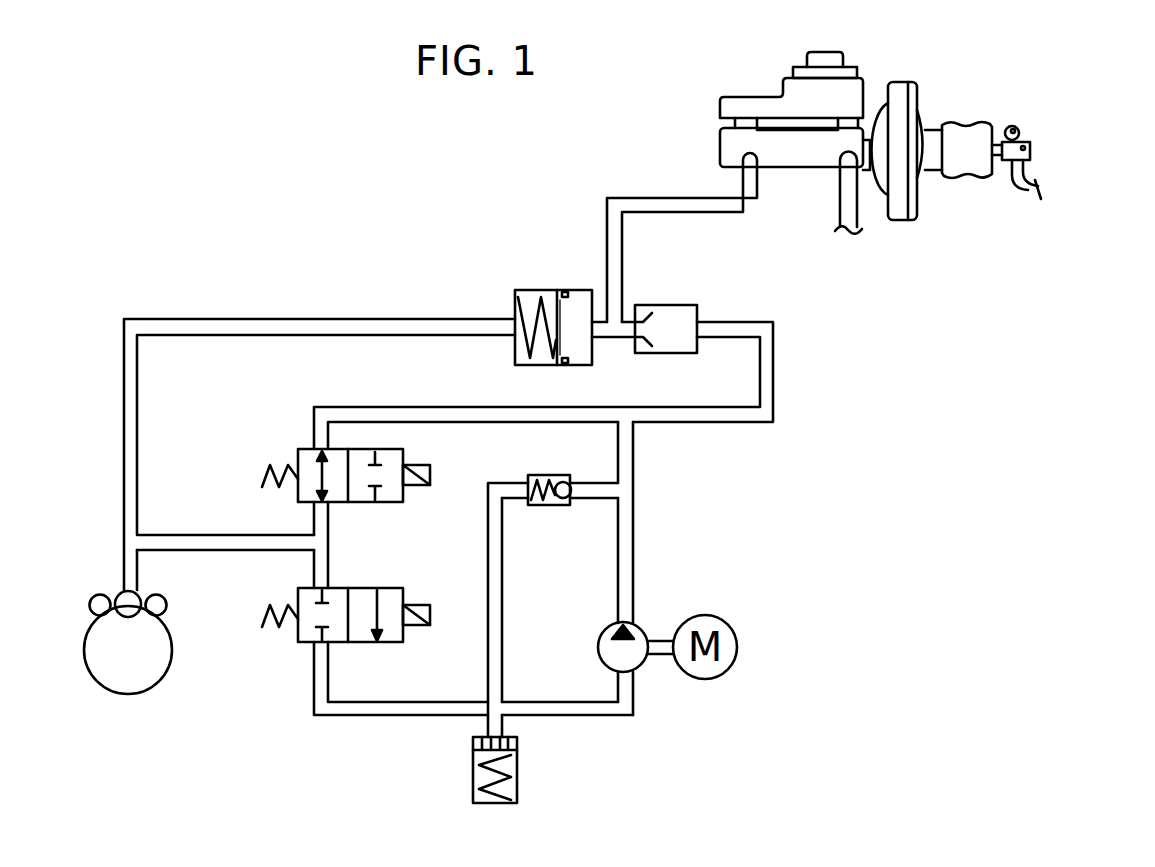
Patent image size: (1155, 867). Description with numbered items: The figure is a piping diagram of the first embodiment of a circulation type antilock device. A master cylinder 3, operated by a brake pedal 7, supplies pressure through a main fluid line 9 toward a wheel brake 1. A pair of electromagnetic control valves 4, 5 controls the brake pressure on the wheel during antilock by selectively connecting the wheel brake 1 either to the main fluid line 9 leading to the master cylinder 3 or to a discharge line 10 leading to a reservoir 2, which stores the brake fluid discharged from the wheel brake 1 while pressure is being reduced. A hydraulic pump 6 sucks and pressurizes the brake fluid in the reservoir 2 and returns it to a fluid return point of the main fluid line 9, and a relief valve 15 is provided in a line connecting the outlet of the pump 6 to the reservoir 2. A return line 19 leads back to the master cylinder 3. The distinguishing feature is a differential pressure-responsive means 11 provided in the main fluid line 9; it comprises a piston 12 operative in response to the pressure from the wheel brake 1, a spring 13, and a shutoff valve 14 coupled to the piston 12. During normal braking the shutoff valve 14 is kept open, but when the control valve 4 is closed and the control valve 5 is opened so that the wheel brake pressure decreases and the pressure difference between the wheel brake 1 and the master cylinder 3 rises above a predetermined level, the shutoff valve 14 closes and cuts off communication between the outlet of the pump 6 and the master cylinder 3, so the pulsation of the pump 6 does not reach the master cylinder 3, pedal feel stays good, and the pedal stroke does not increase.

The wheel brake 1 is at (84, 641).
The reservoir 2 is at (517, 770).
The master cylinder 3 is at (780, 140).
The electromagnetic control valve 4 is at (298, 450).
The electromagnetic control valve 5 is at (310, 643).
The hydraulic pump 6 is at (638, 668).
The brake pedal 7 is at (1043, 192).
The main fluid line 9 is at (682, 198).
The discharge line 10 is at (418, 715).
The differential pressure-responsive means 11 is at (552, 299).
The piston 12 is at (578, 343).
The spring 13 is at (535, 313).
The shutoff valve 14 is at (645, 322).
The relief valve 15 is at (552, 505).
The return line 19 is at (210, 319).